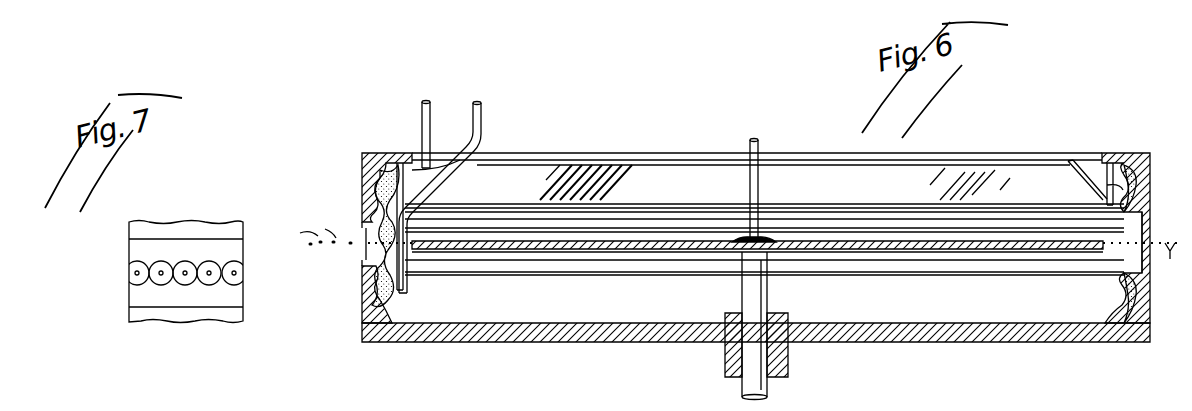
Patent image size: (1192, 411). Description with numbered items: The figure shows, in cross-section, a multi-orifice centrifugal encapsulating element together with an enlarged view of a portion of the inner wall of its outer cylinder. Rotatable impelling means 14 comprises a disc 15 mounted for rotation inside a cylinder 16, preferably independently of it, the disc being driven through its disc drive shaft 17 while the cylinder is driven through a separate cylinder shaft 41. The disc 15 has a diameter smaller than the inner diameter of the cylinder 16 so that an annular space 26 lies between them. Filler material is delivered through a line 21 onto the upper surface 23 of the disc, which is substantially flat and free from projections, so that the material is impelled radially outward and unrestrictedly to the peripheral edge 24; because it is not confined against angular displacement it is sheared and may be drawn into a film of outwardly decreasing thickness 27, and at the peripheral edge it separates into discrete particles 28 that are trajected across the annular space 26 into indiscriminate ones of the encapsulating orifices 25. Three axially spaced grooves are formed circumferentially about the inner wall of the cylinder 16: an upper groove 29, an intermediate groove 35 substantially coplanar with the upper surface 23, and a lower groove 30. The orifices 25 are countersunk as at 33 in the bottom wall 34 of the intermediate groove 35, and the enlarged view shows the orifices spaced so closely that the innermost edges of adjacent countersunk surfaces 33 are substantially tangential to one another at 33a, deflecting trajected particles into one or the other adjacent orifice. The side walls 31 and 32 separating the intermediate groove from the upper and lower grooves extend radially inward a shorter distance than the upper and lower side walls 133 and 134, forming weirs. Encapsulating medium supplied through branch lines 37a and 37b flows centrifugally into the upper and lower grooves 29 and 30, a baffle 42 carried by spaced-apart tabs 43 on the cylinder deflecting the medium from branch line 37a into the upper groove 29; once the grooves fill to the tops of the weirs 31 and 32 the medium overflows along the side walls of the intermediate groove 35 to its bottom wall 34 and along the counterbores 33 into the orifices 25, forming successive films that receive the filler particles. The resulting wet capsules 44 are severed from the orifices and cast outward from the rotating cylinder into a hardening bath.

In FIG. 6, the rotatable impelling means 14 is at (690, 258).
In FIG. 6, the disc 15 is at (578, 258).
In FIG. 6, the cylinder 16 is at (725, 220).
In FIG. 6, the disc drive shaft 17 is at (772, 392).
In FIG. 6, the line 21 is at (762, 140).
In FIG. 6, the upper surface 23 is at (628, 253).
In FIG. 6, the peripheral edge 24 is at (1102, 253).
In FIG. 7, the encapsulating orifices 25 is at (206, 262).
In FIG. 6, the encapsulating orifices 25 is at (364, 240).
In FIG. 6, the annular space 26 is at (1111, 250).
In FIG. 6, the film of outwardly decreasing thickness 27 is at (888, 238).
In FIG. 6, the discrete particles 28 is at (1130, 258).
In FIG. 6, the upper groove 29 is at (370, 190).
In FIG. 6, the lower groove 30 is at (370, 290).
In FIG. 7, the side wall (weir) 31 is at (172, 223).
In FIG. 6, the side wall (weir) 31 is at (383, 217).
In FIG. 7, the side wall (weir) 32 is at (213, 322).
In FIG. 6, the side wall (weir) 32 is at (370, 272).
In FIG. 7, the countersunk surfaces 33 is at (185, 276).
In FIG. 6, the countersunk surfaces 33 is at (1146, 228).
In FIG. 7, the tangential edges 33a is at (143, 266).
In FIG. 7, the bottom wall 34 is at (232, 294).
In FIG. 6, the bottom wall 34 is at (396, 236).
In FIG. 6, the intermediate groove 35 is at (400, 226).
In FIG. 6, the branch line 37a is at (420, 100).
In FIG. 6, the branch line 37b is at (484, 108).
In FIG. 6, the cylinder shaft 41 is at (724, 367).
In FIG. 6, the baffle 42 is at (1089, 187).
In FIG. 6, the tabs 43 is at (1106, 186).
In FIG. 6, the wet capsules 44 is at (306, 238).
In FIG. 6, the upper side wall 133 is at (377, 158).
In FIG. 6, the lower side wall 134 is at (372, 314).